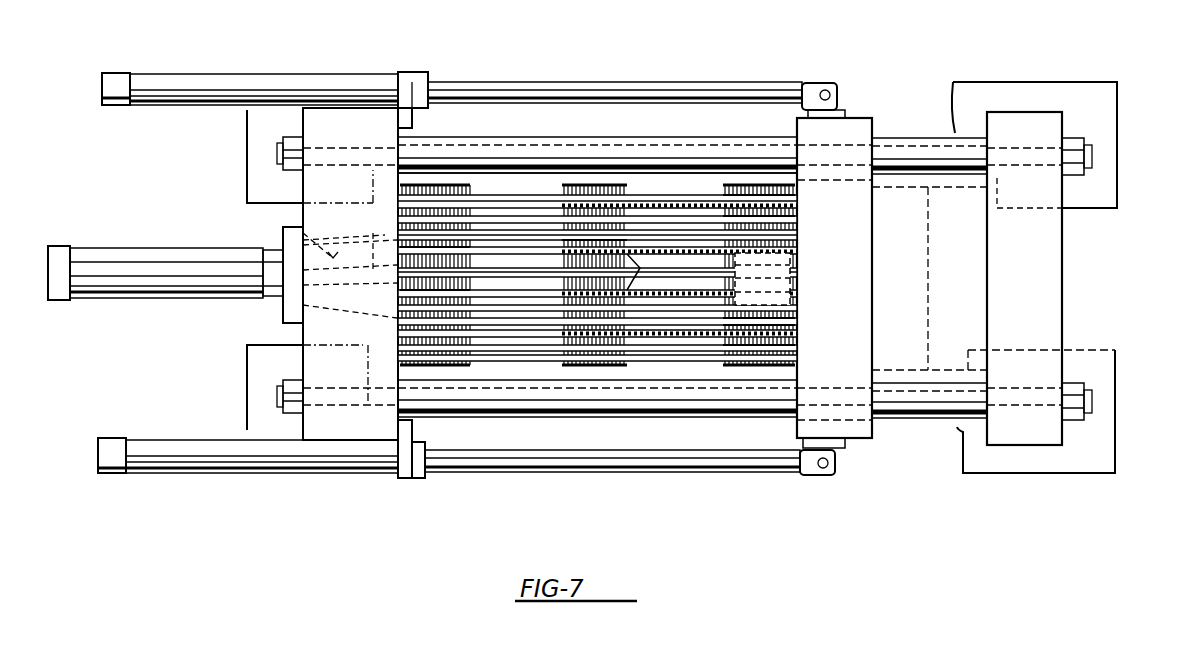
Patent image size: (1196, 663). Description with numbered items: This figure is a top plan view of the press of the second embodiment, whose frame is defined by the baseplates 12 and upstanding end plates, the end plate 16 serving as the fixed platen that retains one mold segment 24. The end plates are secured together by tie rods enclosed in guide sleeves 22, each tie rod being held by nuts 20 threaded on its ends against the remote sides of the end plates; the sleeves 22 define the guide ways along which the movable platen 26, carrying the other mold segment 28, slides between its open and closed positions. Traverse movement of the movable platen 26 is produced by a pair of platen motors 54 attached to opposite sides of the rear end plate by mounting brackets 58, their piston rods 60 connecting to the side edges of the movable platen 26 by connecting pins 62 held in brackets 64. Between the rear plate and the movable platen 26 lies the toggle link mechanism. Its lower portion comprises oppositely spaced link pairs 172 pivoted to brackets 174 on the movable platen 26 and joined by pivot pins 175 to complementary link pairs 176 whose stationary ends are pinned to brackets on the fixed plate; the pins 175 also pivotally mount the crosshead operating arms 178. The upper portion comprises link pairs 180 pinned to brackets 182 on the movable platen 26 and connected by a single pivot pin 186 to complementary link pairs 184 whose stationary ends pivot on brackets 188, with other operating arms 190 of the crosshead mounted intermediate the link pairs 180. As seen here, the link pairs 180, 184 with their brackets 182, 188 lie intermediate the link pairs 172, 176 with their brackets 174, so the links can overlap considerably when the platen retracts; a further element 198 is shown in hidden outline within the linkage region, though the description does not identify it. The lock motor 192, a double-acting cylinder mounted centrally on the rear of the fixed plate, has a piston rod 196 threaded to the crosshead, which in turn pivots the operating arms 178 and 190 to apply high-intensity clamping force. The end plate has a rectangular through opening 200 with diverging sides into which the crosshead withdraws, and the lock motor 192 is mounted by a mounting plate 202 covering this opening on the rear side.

The baseplate 12 is at (247, 131).
The end plate 16 is at (1060, 242).
The nut 20 is at (1090, 152).
The guide sleeve 22 is at (900, 140).
The mold segment 24 is at (957, 430).
The movable platen 26 is at (872, 300).
The mold segment 28 is at (912, 362).
The platen motor 54 is at (214, 75).
The mounting bracket 58 is at (420, 442).
The piston rod 60 is at (578, 86).
The vertical pin 62 is at (829, 91).
The mounting bracket 64 is at (840, 110).
The link pair 172 is at (662, 205).
The bracket 174 is at (785, 187).
The pivot pin 175 is at (582, 183).
The complementary link pair 176 is at (486, 200).
The crosshead operating arm 178 is at (437, 190).
The link pair 180 is at (782, 214).
The bracket 182 is at (790, 322).
The complementary link pair 184 is at (540, 242).
The pivot pin 186 is at (622, 238).
The bracket 188 is at (397, 297).
The operating arm 190 is at (648, 256).
The lock motor 192 is at (105, 254).
The piston rod 196 is at (378, 241).
The hidden block 198 is at (790, 275).
The through opening 200 is at (283, 235).
The mounting plate 202 is at (283, 318).